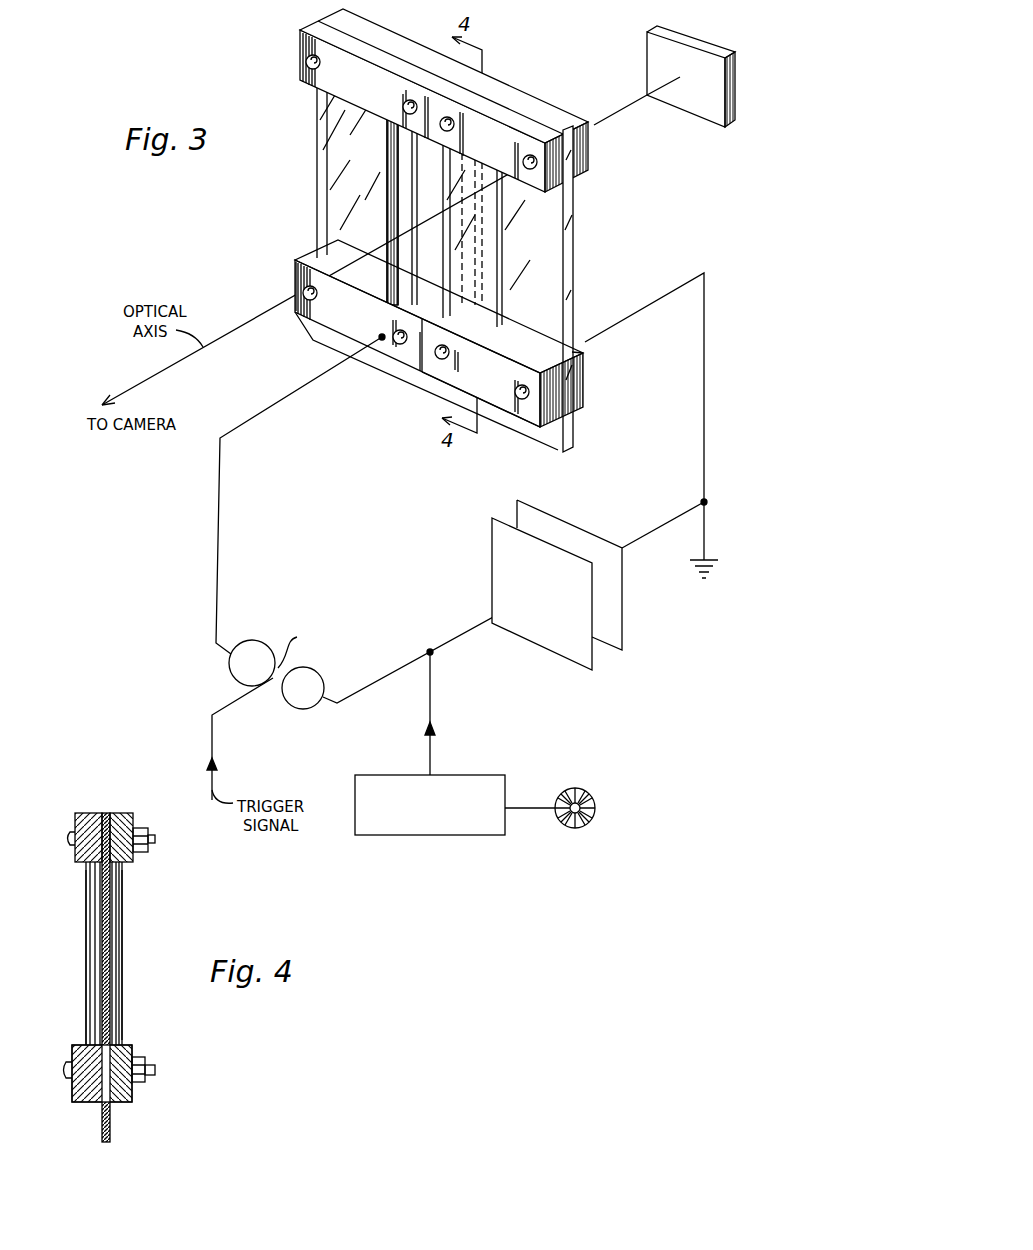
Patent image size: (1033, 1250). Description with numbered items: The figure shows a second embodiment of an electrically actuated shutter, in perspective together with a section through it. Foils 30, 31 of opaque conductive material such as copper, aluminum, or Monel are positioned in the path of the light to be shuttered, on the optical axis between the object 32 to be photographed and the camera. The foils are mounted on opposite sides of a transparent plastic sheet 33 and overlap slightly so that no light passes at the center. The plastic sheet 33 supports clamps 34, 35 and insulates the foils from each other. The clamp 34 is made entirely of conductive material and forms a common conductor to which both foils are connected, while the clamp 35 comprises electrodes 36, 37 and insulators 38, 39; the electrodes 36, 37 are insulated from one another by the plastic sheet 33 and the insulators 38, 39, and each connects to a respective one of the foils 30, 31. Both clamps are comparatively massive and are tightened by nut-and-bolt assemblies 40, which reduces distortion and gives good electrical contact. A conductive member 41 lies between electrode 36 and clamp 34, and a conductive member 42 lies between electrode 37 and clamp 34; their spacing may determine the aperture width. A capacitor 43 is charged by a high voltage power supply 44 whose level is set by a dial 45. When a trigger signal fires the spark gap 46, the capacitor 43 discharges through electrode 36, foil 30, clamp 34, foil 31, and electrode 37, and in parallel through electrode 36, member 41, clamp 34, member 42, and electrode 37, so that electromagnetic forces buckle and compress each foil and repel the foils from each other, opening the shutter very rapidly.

In FIG. 3, the foil 30 is at (390, 172).
In FIG. 4, the foil 30 is at (97, 888).
In FIG. 3, the foil 31 is at (505, 264).
In FIG. 4, the foil 31 is at (117, 892).
In FIG. 3, the object 32 is at (703, 118).
In FIG. 3, the transparent plastic sheet 33 is at (575, 190).
In FIG. 4, the transparent plastic sheet 33 is at (107, 813).
In FIG. 3, the clamp 34 is at (630, 166).
In FIG. 4, the clamp 34 is at (57, 865).
In FIG. 3, the clamp 35 is at (619, 416).
In FIG. 4, the clamp 35 is at (57, 1128).
In FIG. 3, the electrode 36 is at (302, 316).
In FIG. 3, the electrode 37 is at (578, 341).
In FIG. 4, the electrode 37 is at (130, 1047).
In FIG. 3, the insulator 38 is at (383, 241).
In FIG. 3, the insulator 39 is at (522, 423).
In FIG. 4, the insulator 39 is at (72, 1045).
In FIG. 3, the nut-and-bolt assembly 40 is at (404, 104).
In FIG. 4, the nut-and-bolt assembly 40 is at (155, 840).
In FIG. 3, the conductive member 41 is at (405, 153).
In FIG. 4, the conductive member 41 is at (85, 933).
In FIG. 3, the conductive member 42 is at (482, 219).
In FIG. 4, the conductive member 42 is at (122, 940).
In FIG. 3, the capacitor 43 is at (557, 652).
In FIG. 3, the high voltage power supply 44 is at (447, 836).
In FIG. 3, the dial 45 is at (557, 826).
In FIG. 3, the spark gap 46 is at (295, 731).